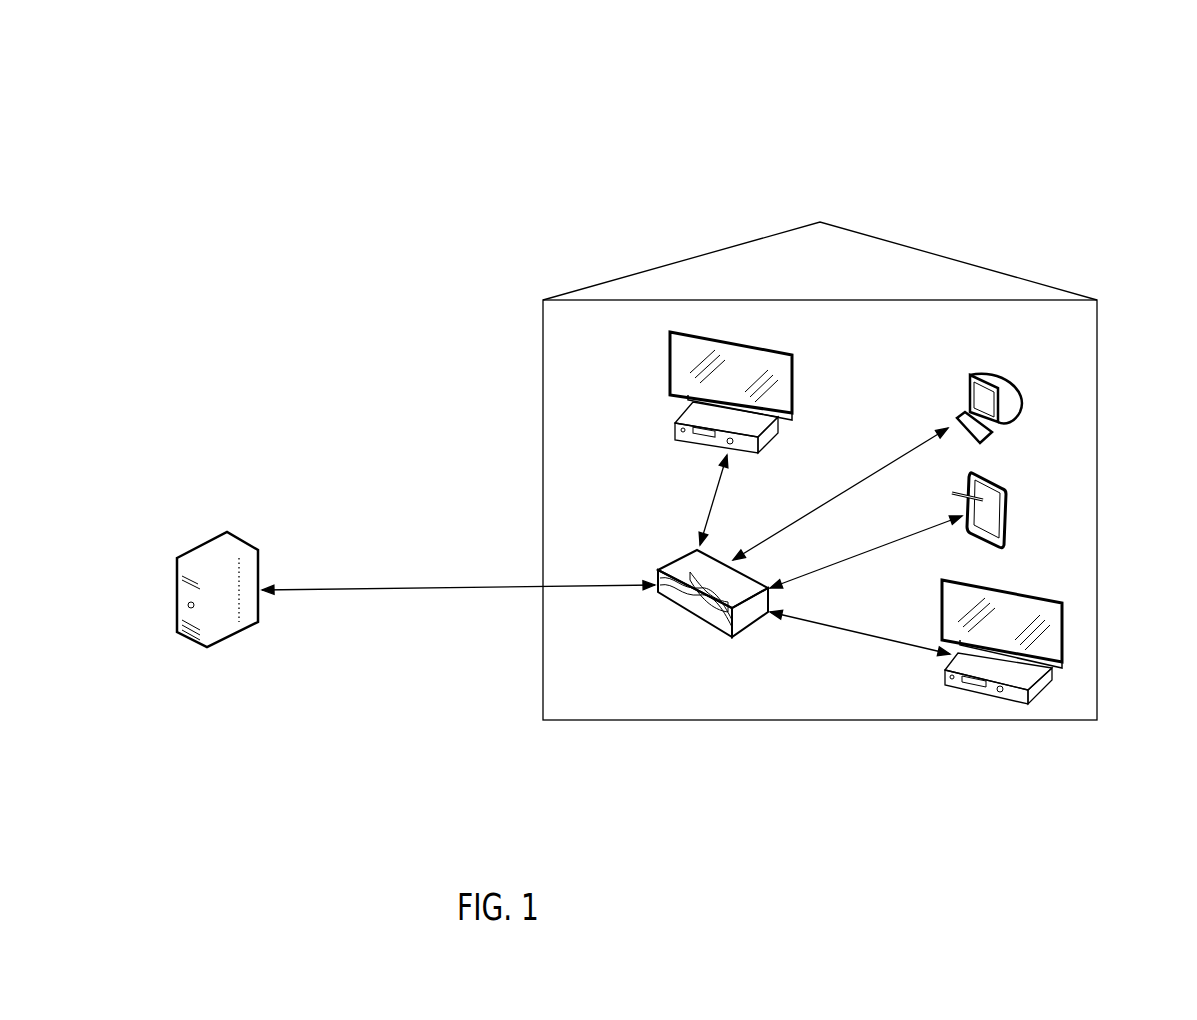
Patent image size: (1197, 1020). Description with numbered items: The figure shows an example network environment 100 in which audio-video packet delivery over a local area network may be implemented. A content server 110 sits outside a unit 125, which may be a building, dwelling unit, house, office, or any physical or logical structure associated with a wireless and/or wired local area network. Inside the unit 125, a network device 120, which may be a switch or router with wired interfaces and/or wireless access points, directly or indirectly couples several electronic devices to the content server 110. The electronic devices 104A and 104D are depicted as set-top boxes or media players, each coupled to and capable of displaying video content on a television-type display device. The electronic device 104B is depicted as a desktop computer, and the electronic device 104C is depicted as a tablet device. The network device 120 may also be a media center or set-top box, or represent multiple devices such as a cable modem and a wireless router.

The network environment 100 is at (1082, 48).
The unit 125 is at (1008, 278).
The content server 110 is at (242, 536).
The network device 120 is at (688, 550).
The electronic device 104A is at (672, 427).
The electronic device 104B is at (1000, 376).
The electronic device 104C is at (1006, 490).
The electronic device 104D is at (940, 676).